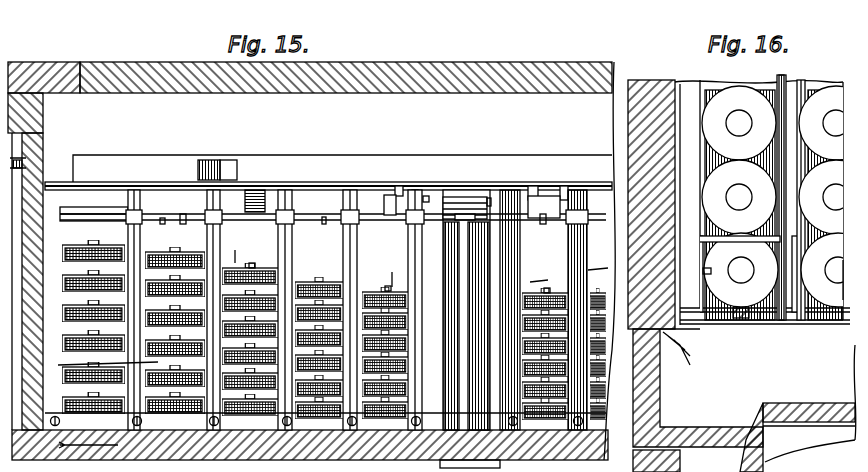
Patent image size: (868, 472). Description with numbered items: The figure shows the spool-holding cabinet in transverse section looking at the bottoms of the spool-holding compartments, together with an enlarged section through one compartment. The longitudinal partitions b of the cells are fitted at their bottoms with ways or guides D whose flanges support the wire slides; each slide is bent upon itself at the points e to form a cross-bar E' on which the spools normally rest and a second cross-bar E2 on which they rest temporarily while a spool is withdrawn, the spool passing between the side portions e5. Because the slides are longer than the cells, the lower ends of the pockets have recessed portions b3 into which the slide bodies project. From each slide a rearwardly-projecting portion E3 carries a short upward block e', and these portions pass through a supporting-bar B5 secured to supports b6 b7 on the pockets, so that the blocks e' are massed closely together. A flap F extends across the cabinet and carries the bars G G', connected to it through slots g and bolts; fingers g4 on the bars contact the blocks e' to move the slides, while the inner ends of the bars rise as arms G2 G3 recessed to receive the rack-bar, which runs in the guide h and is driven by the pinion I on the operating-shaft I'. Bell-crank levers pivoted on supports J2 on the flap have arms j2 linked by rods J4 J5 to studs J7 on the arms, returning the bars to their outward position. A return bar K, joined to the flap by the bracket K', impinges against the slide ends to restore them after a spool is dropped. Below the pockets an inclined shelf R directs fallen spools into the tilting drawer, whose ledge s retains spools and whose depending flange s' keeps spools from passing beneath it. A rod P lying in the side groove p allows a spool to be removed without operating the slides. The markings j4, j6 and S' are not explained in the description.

In FIG. 15, the supporting-bar B5 is at (592, 150).
In FIG. 15, the arm of bell-crank lever j2 is at (18, 154).
In FIG. 15, the flap F is at (183, 168).
In FIG. 15, the switch box j4 is at (224, 162).
In FIG. 15, the bar K is at (328, 172).
In FIG. 15, the bracket K' is at (269, 183).
In FIG. 15, the rod J4 is at (398, 186).
In FIG. 15, the contact pin j6 is at (416, 190).
In FIG. 15, the stud J7 is at (536, 186).
In FIG. 15, the rod J5 is at (566, 186).
In FIG. 15, the support J2 is at (94, 205).
In FIG. 15, the cross-bar E' is at (332, 331).
In FIG. 16, the cross-bar E' is at (744, 331).
In FIG. 15, the operating-shaft I' is at (469, 294).
In FIG. 15, the pinion I is at (465, 202).
In FIG. 15, the guide h is at (466, 218).
In FIG. 15, the support b6 is at (431, 196).
In FIG. 15, the support b7 is at (493, 199).
In FIG. 15, the block e' is at (333, 219).
In FIG. 15, the bar G is at (182, 212).
In FIG. 15, the finger g4 is at (324, 222).
In FIG. 15, the arm G2 is at (390, 215).
In FIG. 15, the bar G' is at (544, 207).
In FIG. 15, the arm G3 is at (544, 227).
In FIG. 15, the rearwardly-projecting portion E3 is at (210, 252).
In FIG. 16, the rearwardly-projecting portion E3 is at (807, 292).
In FIG. 15, the longitudinal partition b is at (252, 262).
In FIG. 15, the slot g is at (103, 364).
In FIG. 15, the guide D is at (235, 410).
In FIG. 16, the guide D is at (803, 318).
In FIG. 16, the channel S' is at (698, 400).
In FIG. 16, the inclined shelf R is at (809, 392).
In FIG. 16, the ledge s is at (751, 437).
In FIG. 16, the depending flange s' is at (810, 448).
In FIG. 16, the rod P is at (787, 86).
In FIG. 16, the groove p is at (805, 92).
In FIG. 16, the second cross-bar E2 is at (779, 203).
In FIG. 16, the side portion e5 is at (700, 278).
In FIG. 16, the bend point e is at (727, 302).
In FIG. 16, the recessed portion b3 is at (852, 280).